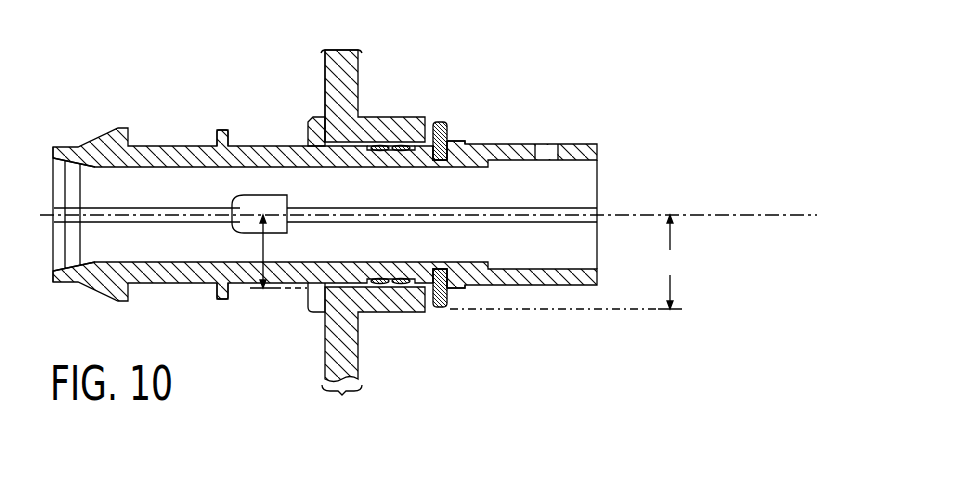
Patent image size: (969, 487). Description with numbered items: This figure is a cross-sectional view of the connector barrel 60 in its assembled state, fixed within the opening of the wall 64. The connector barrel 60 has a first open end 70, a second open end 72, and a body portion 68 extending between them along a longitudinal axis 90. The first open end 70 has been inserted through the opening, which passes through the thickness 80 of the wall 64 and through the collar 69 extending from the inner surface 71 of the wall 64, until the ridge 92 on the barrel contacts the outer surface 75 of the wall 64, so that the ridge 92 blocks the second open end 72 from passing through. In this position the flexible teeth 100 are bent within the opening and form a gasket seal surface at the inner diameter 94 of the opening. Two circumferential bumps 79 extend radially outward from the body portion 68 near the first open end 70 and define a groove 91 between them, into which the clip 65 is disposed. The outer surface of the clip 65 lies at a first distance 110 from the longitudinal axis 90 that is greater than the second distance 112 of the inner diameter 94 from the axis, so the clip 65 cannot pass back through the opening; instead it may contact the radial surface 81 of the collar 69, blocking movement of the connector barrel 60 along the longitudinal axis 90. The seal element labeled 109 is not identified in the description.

The connector barrel 60 is at (209, 125).
The wall 64 is at (345, 50).
The clip 65 is at (446, 110).
The body portion 68 is at (162, 145).
The collar 69 is at (370, 322).
The first open end 70 is at (597, 185).
The inner surface 71 is at (360, 50).
The second open end 72 is at (53, 209).
The outer surface 75 is at (324, 92).
The circumferential bumps 79 is at (429, 121).
The thickness 80 is at (342, 405).
The radial surface 81 is at (441, 310).
The longitudinal axis 90 is at (752, 215).
The groove 91 is at (442, 166).
The ridge 92 is at (308, 136).
The inner diameter 94 is at (342, 143).
The flexible teeth 100 is at (386, 156).
The O-ring seal 109 is at (436, 120).
The first distance 110 is at (569, 262).
The second distance 112 is at (262, 248).